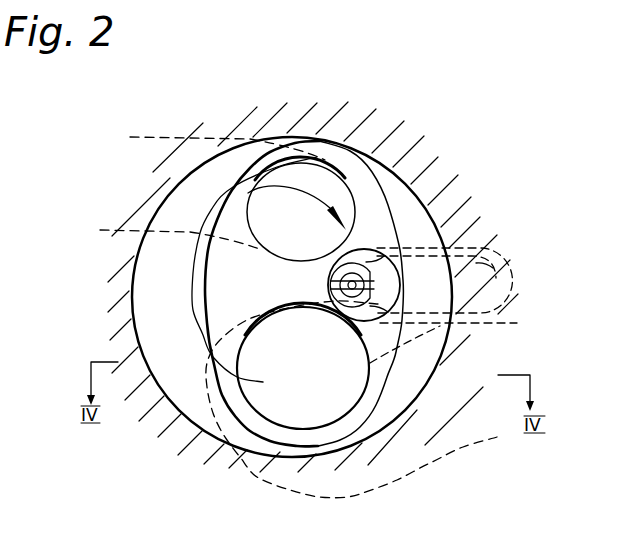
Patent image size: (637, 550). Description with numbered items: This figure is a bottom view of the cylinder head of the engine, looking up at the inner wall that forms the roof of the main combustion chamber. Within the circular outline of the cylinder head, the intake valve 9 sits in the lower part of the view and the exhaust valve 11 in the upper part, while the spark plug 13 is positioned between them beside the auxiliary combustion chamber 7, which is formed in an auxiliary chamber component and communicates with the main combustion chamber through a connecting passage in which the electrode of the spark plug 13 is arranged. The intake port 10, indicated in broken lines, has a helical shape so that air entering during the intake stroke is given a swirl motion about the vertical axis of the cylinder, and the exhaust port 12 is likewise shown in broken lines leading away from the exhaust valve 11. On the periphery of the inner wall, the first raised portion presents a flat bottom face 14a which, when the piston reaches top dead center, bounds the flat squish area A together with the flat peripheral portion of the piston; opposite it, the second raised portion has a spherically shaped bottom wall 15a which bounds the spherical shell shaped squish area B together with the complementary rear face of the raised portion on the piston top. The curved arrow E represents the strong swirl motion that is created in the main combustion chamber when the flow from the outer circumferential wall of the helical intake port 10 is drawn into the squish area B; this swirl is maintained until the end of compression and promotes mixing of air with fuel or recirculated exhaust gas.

The flat squish area A is at (418, 218).
The spherical shell shaped squish area B is at (212, 174).
The swirl motion E is at (193, 308).
The auxiliary combustion chamber 7 is at (512, 248).
The intake valve 9 is at (293, 412).
The intake port 10 is at (412, 462).
The exhaust valve 11 is at (331, 183).
The exhaust port 12 is at (160, 146).
The spark plug 13 is at (330, 272).
The flat bottom face 14a is at (423, 351).
The bottom wall 15a is at (178, 207).